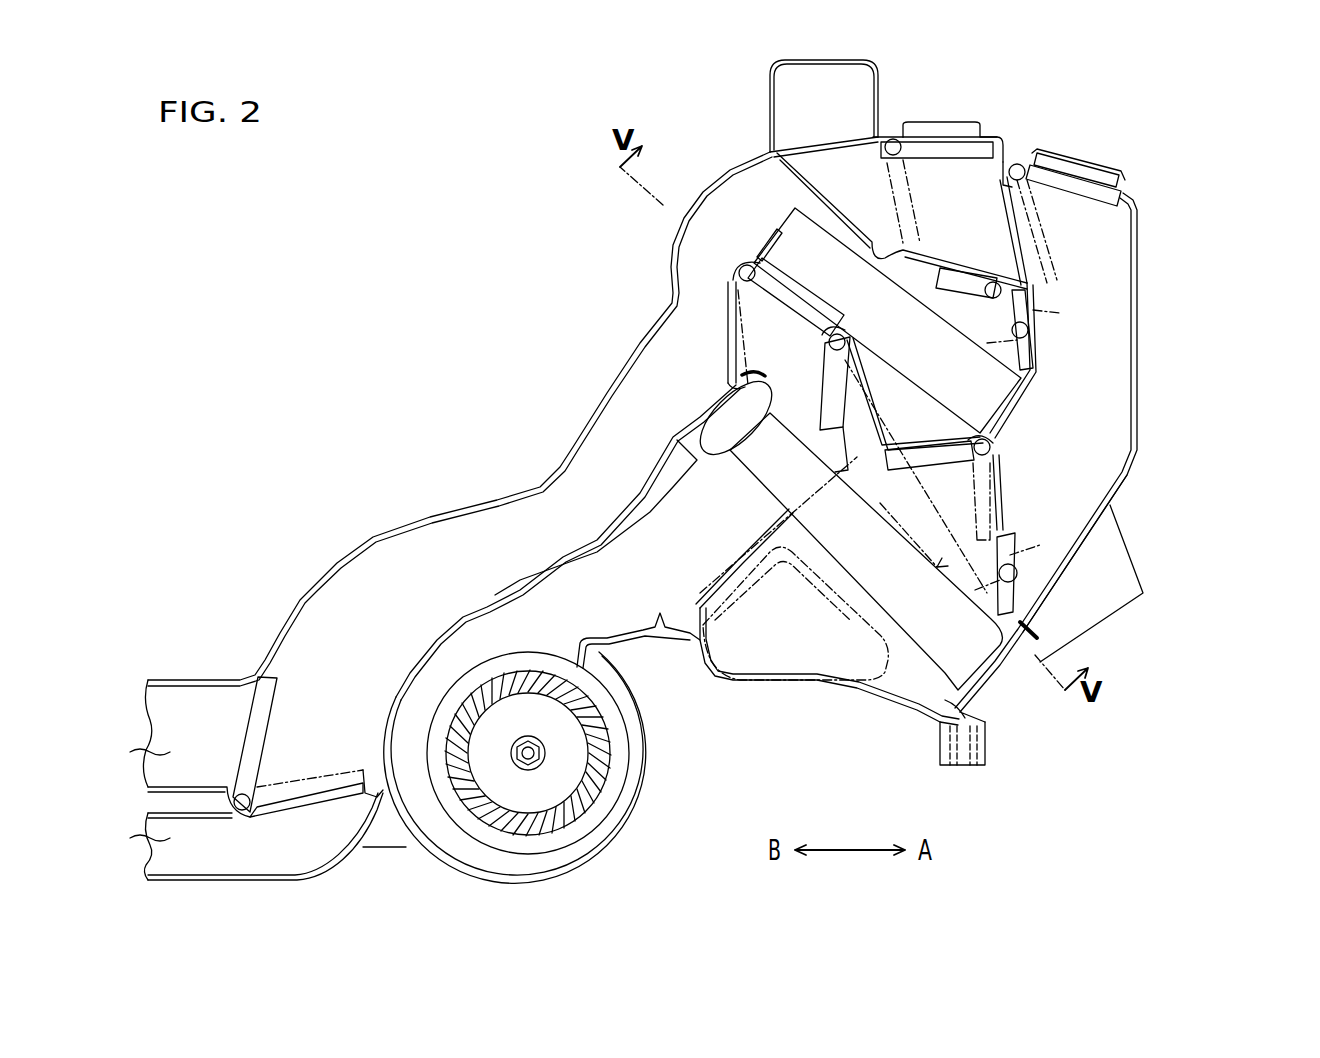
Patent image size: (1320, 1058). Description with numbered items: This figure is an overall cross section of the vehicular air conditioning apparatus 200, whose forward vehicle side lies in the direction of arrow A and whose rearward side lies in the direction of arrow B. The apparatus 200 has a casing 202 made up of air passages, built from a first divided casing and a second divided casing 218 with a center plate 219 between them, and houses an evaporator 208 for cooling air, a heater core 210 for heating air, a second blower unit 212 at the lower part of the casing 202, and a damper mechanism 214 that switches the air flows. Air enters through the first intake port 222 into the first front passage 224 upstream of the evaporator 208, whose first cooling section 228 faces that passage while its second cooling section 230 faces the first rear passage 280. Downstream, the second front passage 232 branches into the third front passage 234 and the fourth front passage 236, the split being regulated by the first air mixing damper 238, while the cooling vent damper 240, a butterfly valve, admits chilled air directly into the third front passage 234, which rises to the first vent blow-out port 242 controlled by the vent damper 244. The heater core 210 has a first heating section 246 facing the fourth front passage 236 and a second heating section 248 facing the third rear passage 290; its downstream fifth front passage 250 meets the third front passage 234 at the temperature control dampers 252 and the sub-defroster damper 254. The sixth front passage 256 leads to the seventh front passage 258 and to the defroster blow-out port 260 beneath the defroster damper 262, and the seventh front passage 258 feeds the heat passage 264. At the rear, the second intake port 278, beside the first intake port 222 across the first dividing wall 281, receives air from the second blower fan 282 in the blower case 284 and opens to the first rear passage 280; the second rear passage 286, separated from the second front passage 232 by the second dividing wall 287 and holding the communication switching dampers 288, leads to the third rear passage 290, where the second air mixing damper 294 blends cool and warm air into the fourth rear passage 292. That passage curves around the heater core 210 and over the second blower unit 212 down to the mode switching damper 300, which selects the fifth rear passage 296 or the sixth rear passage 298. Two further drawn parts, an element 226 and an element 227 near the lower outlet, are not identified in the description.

The vehicular air conditioning apparatus 200 is at (1133, 87).
The casing 202 is at (671, 217).
The evaporator 208 is at (936, 539).
The heater core 210 is at (924, 394).
The second blower unit 212 is at (611, 865).
The damper mechanism 214 is at (717, 265).
The second divided casing 218 is at (1152, 248).
The center plate 219 is at (1112, 380).
The first intake port 222 is at (823, 683).
The first front passage 224 is at (898, 693).
The outlet opening 226 is at (962, 768).
The wall portion 227 is at (973, 720).
The first cooling section 228 is at (870, 562).
The second cooling section 230 is at (768, 466).
The second front passage 232 is at (950, 523).
The third front passage 234 is at (1112, 325).
The fourth front passage 236 is at (890, 372).
The first air mixing damper 238 is at (935, 458).
The cooling vent damper 240 is at (1012, 597).
The first vent blow-out port 242 is at (1095, 168).
The vent damper 244 is at (1080, 200).
The first heating section 246 is at (1005, 382).
The second heating section 248 is at (783, 243).
The fifth front passage 250 is at (935, 270).
The temperature control dampers 252 is at (1030, 330).
The sub-defroster damper 254 is at (985, 290).
The sixth front passage 256 is at (1000, 172).
The seventh front passage 258 is at (876, 152).
The defroster blow-out port 260 is at (970, 128).
The defroster damper 262 is at (938, 150).
The heat passage 264 is at (780, 103).
The second intake port 278 is at (672, 642).
The first rear passage 280 is at (712, 598).
The first dividing wall 281 is at (780, 552).
The second blower fan 282 is at (575, 790).
The blower case 284 is at (645, 772).
The second rear passage 286 is at (800, 405).
The second dividing wall 287 is at (850, 440).
The communication switching dampers 288 is at (825, 360).
The third rear passage 290 is at (780, 322).
The fourth rear passage 292 is at (345, 582).
The second air mixing damper 294 is at (780, 297).
The fifth rear passage 296 is at (167, 748).
The sixth rear passage 298 is at (234, 836).
The mode switching damper 300 is at (258, 740).